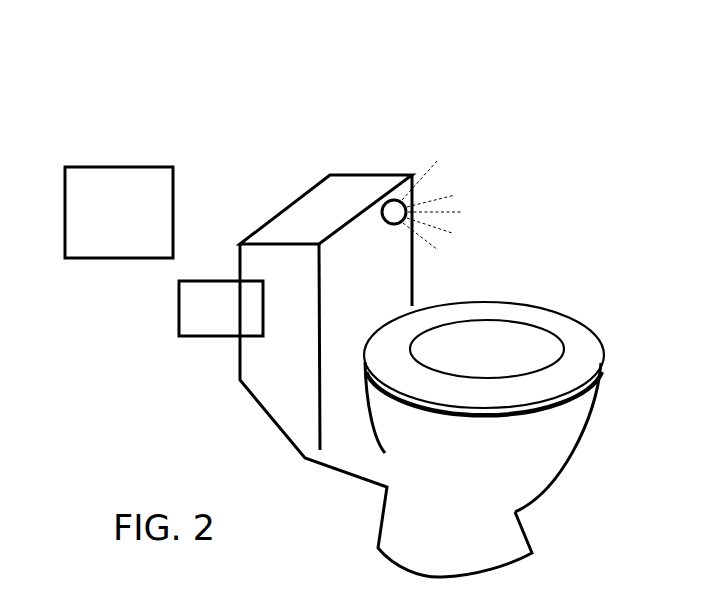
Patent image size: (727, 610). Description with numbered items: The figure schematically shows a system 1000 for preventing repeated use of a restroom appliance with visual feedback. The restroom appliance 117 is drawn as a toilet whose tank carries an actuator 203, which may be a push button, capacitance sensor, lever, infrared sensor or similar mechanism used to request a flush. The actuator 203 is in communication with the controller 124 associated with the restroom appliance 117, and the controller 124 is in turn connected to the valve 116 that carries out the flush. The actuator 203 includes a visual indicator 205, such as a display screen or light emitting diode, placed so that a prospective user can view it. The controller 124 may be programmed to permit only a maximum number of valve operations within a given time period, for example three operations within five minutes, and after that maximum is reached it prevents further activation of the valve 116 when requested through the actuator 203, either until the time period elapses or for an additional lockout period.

The system 1000 is at (228, 118).
The restroom appliance 117 is at (327, 198).
The controller 124 is at (377, 215).
The valve 116 is at (221, 308).
The actuator 203 is at (383, 223).
The visual indicator 205 is at (443, 178).